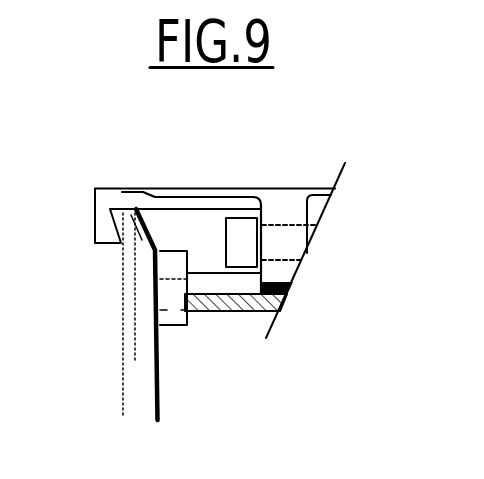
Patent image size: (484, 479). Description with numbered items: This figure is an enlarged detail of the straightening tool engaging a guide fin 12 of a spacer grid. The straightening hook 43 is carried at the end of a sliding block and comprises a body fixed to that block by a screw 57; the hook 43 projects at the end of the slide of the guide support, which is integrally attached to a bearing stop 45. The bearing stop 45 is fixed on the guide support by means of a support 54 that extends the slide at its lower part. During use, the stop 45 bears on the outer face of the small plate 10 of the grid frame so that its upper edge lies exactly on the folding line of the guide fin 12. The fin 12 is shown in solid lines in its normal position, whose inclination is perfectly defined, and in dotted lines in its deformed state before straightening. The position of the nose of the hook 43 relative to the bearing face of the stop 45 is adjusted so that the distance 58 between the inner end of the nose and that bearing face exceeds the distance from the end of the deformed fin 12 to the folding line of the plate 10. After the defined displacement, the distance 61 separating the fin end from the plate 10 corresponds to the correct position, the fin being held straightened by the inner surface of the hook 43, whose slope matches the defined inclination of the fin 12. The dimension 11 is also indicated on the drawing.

The small plate 10 is at (133, 85).
The pane thickness dimension 11 is at (217, 187).
The guide fin 12 is at (138, 228).
The straightening hook 43 is at (95, 214).
The bearing stop 45 is at (170, 288).
The support 54 is at (243, 312).
The screw 57 is at (245, 244).
The distance 58 is at (203, 408).
The distance 61 is at (203, 361).